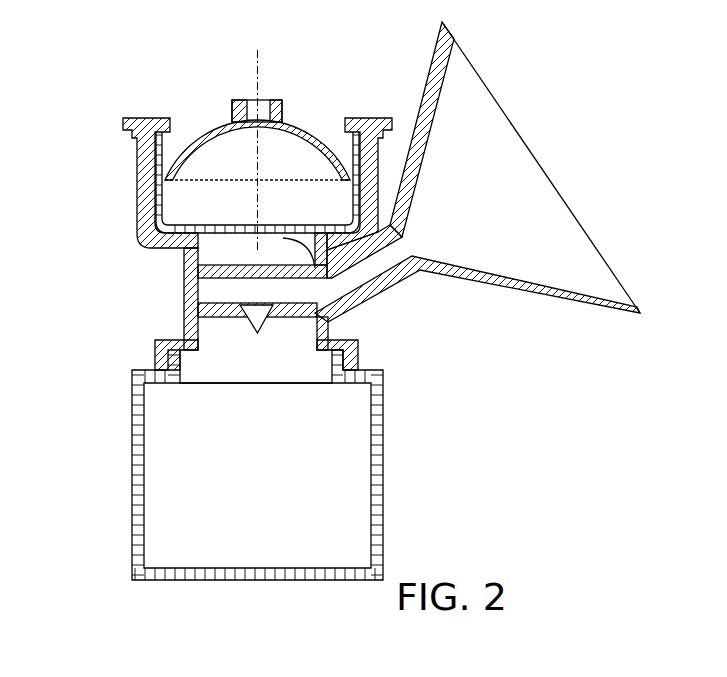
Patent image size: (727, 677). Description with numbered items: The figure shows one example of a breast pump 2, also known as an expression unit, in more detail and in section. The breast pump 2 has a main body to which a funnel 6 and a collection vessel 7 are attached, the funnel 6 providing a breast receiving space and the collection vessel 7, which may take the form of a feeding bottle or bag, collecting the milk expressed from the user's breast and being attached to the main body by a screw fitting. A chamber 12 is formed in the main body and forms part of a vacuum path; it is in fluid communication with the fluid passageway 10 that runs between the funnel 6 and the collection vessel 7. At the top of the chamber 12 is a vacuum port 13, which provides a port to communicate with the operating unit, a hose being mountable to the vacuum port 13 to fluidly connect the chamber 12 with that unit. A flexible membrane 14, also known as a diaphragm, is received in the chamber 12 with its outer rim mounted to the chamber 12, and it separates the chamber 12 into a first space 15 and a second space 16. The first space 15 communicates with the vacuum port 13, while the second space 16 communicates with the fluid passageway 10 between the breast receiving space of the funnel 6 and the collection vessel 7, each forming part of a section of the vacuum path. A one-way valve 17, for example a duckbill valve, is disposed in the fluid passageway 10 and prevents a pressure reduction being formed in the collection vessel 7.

The breast pump 2 is at (432, 485).
The funnel 6 is at (538, 167).
The collection vessel 7 is at (132, 507).
The fluid passageway 10 is at (247, 297).
The chamber 12 is at (140, 205).
The vacuum port 13 is at (262, 100).
The membrane 14 is at (138, 237).
The first space 15 is at (205, 160).
The second space 16 is at (313, 243).
The one-way valve 17 is at (242, 326).